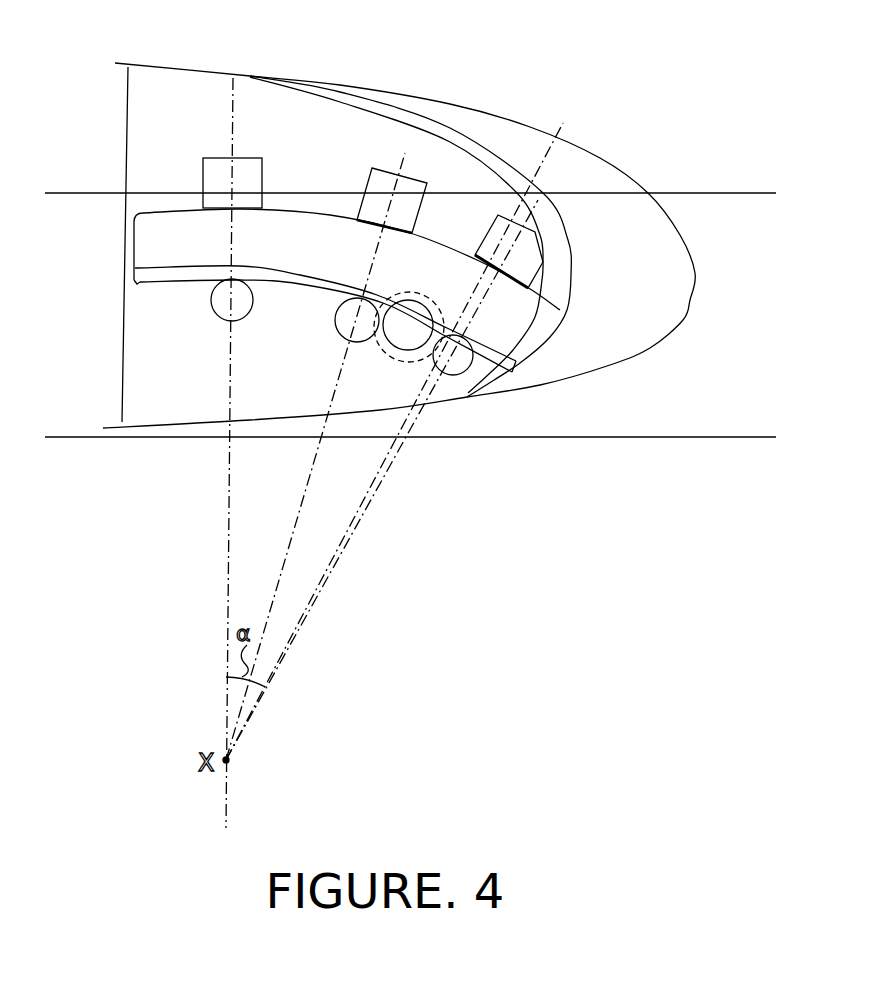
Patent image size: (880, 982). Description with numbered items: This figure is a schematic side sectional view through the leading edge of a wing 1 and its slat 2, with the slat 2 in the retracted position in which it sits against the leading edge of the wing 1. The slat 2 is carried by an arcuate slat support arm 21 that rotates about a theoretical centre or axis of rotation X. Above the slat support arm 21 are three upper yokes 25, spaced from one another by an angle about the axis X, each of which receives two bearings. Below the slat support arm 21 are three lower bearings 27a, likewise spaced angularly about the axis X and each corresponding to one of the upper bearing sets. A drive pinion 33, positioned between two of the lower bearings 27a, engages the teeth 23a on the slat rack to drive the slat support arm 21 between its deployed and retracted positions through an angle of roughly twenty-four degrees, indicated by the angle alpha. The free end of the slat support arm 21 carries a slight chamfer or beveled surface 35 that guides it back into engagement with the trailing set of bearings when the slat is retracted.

The wing 1 is at (147, 78).
The slat 2 is at (683, 270).
The slat support arm 21 is at (143, 243).
The teeth 23a is at (155, 282).
The upper yokes 25 is at (218, 163).
The lower bearings 27a is at (218, 308).
The drive pinion 33 is at (400, 343).
The chamfer or beveled surface 35 is at (140, 285).